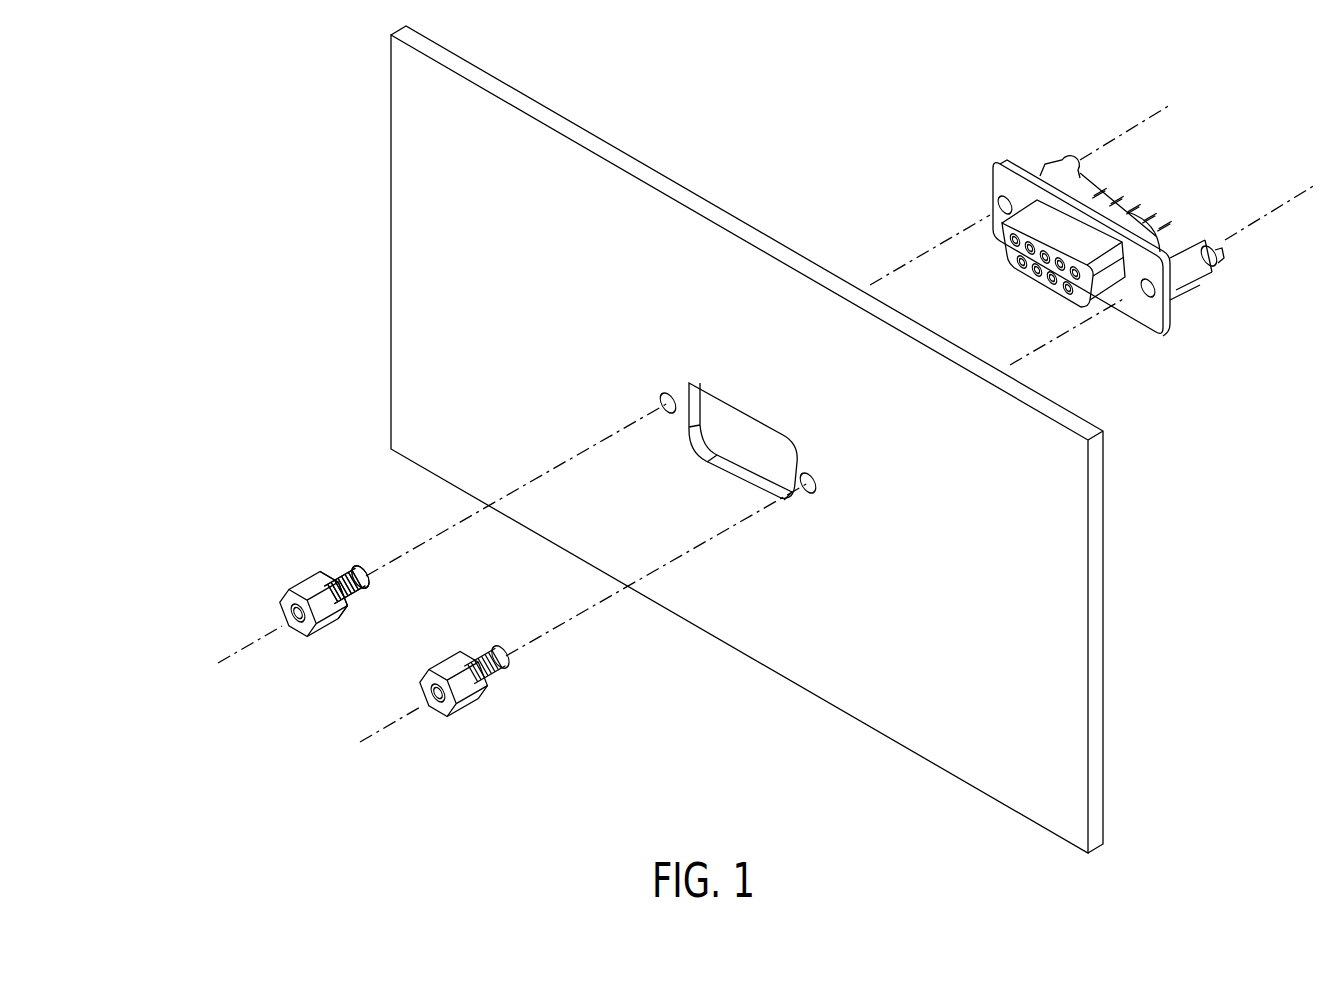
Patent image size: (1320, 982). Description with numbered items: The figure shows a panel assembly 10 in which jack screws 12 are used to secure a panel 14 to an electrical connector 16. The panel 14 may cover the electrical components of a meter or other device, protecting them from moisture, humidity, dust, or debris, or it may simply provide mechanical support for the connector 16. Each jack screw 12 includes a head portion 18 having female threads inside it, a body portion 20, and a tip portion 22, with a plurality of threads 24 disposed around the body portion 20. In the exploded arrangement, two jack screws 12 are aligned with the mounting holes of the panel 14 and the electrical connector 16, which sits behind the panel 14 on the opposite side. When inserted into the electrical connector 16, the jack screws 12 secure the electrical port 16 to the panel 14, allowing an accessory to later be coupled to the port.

The connector mounting assembly 10 is at (150, 70).
The jack screw 12 is at (505, 708).
The panel 14 is at (1145, 642).
The electrical connector 16 is at (1206, 346).
The head portion 18 is at (252, 617).
The body portion 20 is at (333, 576).
The tip portion 22 is at (365, 562).
The threads 24 is at (365, 592).